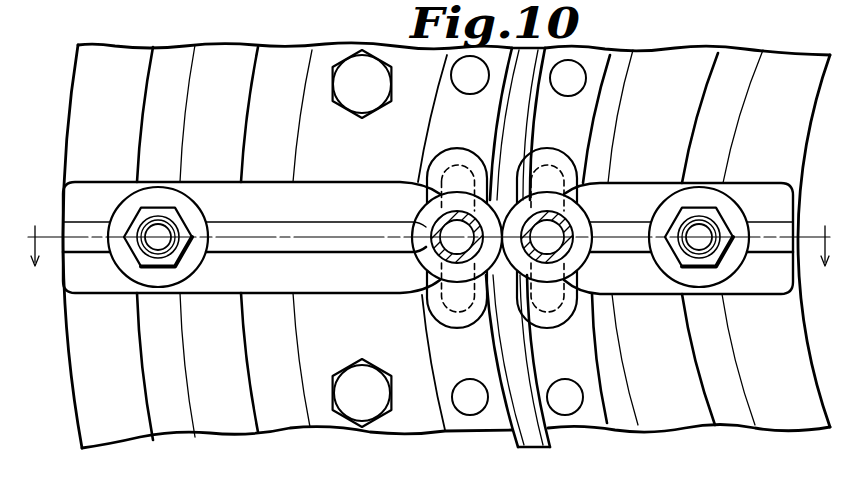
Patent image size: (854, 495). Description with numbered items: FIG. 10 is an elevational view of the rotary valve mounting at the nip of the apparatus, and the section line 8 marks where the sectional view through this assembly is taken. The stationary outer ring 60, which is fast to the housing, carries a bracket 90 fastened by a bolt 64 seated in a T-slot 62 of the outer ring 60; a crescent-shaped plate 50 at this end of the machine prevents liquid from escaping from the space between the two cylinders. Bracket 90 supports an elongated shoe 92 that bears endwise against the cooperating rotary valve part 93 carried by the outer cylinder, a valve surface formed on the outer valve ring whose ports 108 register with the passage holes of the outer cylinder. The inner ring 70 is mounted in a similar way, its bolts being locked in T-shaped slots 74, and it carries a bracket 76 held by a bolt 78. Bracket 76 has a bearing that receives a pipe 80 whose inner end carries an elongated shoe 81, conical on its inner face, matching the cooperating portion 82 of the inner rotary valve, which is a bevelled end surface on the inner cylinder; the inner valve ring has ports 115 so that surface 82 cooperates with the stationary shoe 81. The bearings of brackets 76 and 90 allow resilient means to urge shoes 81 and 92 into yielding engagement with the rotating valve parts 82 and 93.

The section line 8- 8 is at (428, 261).
The crescent-shaped plate 50 is at (540, 438).
The outer ring 60 is at (80, 103).
The T-slot 62 is at (173, 133).
The bolt 64 is at (160, 235).
The inner ring 70 is at (780, 60).
The T-shaped slot 74 is at (718, 151).
The bracket 76 is at (633, 195).
The bolt 78 is at (703, 232).
The pipe 80 is at (563, 227).
The elongated shoe 81 is at (555, 158).
The cooperating portion of the rotary valve 82 is at (595, 65).
The bracket 90 is at (312, 198).
The elongated shoe 92 is at (453, 158).
The rotary valve part 93 is at (453, 62).
The port 108 is at (465, 78).
The port 115 is at (565, 72).